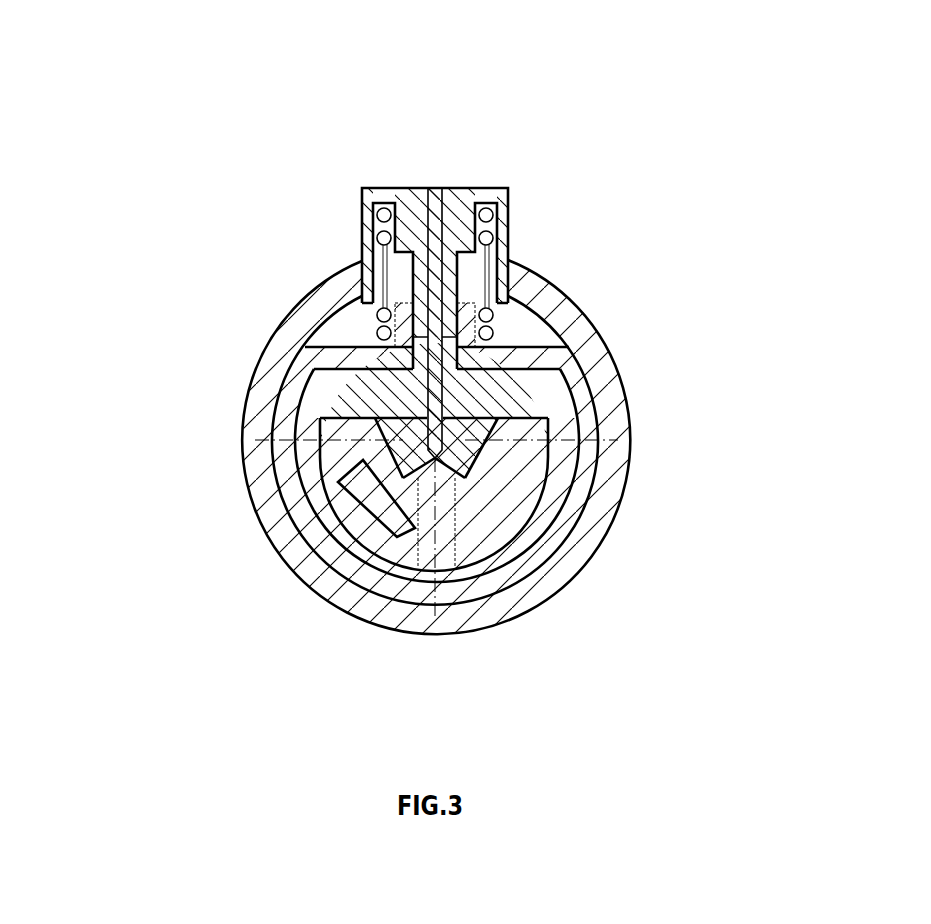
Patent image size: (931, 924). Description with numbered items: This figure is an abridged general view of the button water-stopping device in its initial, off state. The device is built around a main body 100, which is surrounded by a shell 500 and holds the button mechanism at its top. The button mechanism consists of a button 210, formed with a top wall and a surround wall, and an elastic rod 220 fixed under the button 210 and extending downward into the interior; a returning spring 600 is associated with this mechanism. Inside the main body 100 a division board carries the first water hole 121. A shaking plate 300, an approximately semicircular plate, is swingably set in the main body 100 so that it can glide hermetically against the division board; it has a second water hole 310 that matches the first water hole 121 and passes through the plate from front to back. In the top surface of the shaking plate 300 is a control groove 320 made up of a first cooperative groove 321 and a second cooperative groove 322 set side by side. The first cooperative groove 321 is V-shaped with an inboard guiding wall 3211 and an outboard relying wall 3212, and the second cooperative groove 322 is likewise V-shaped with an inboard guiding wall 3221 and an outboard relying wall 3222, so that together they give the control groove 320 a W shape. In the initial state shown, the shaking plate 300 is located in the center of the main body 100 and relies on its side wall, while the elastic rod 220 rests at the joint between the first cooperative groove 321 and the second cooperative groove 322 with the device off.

The main body 100 is at (420, 553).
The first water hole 121 is at (350, 471).
The button 210 is at (440, 187).
The elastic rod 220 is at (441, 396).
The shaking plate 300 is at (578, 535).
The second water hole 310 is at (365, 518).
The control groove 320 is at (395, 417).
The first cooperative groove 321 is at (358, 416).
The inboard guiding wall 3211 is at (424, 535).
The outboard relying wall 3212 is at (345, 472).
The second cooperative groove 322 is at (520, 416).
The inboard guiding wall 3221 is at (464, 535).
The outboard relying wall 3222 is at (552, 476).
The shell 500 is at (565, 568).
The returning spring 600 is at (512, 290).